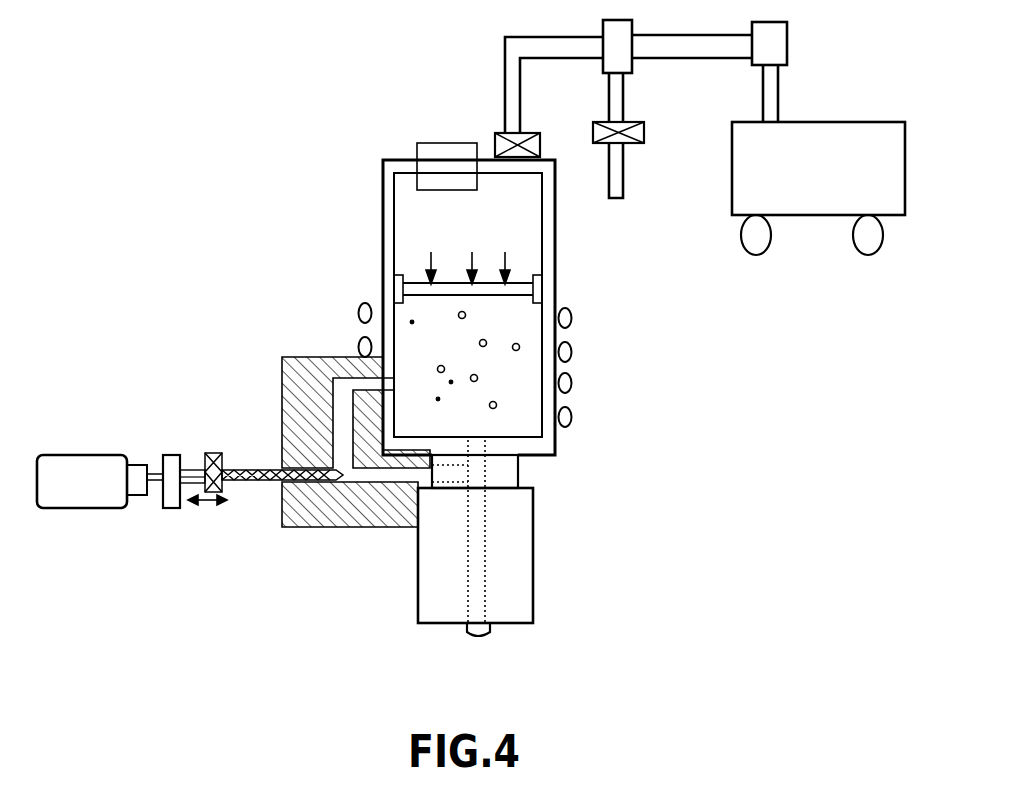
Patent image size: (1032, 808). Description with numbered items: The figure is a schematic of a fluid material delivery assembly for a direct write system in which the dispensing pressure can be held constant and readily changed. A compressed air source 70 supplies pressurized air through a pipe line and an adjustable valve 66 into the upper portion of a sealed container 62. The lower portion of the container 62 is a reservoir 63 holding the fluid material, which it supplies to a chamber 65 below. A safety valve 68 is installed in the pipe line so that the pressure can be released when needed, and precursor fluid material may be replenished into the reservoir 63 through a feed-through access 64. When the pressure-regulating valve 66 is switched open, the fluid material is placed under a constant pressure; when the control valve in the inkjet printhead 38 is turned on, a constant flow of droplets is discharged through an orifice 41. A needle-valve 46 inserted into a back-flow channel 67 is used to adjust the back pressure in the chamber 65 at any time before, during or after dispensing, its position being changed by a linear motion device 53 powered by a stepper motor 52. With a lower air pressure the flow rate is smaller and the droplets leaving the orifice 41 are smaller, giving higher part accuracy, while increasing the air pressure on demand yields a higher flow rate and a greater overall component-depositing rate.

The inkjet printhead 38 is at (423, 573).
The orifice 41 is at (490, 628).
The needle-valve 46 is at (258, 468).
The stepper motor 52 is at (97, 458).
The linear motion device 53 is at (173, 503).
The sealed container 62 is at (383, 228).
The reservoir 63 is at (520, 415).
The feed-through access 64 is at (428, 140).
The chamber 65 is at (472, 472).
The adjustable valve 66 is at (495, 132).
The back-flow channel 67 is at (342, 415).
The safety valve 68 is at (644, 125).
The compressed air source 70 is at (845, 197).